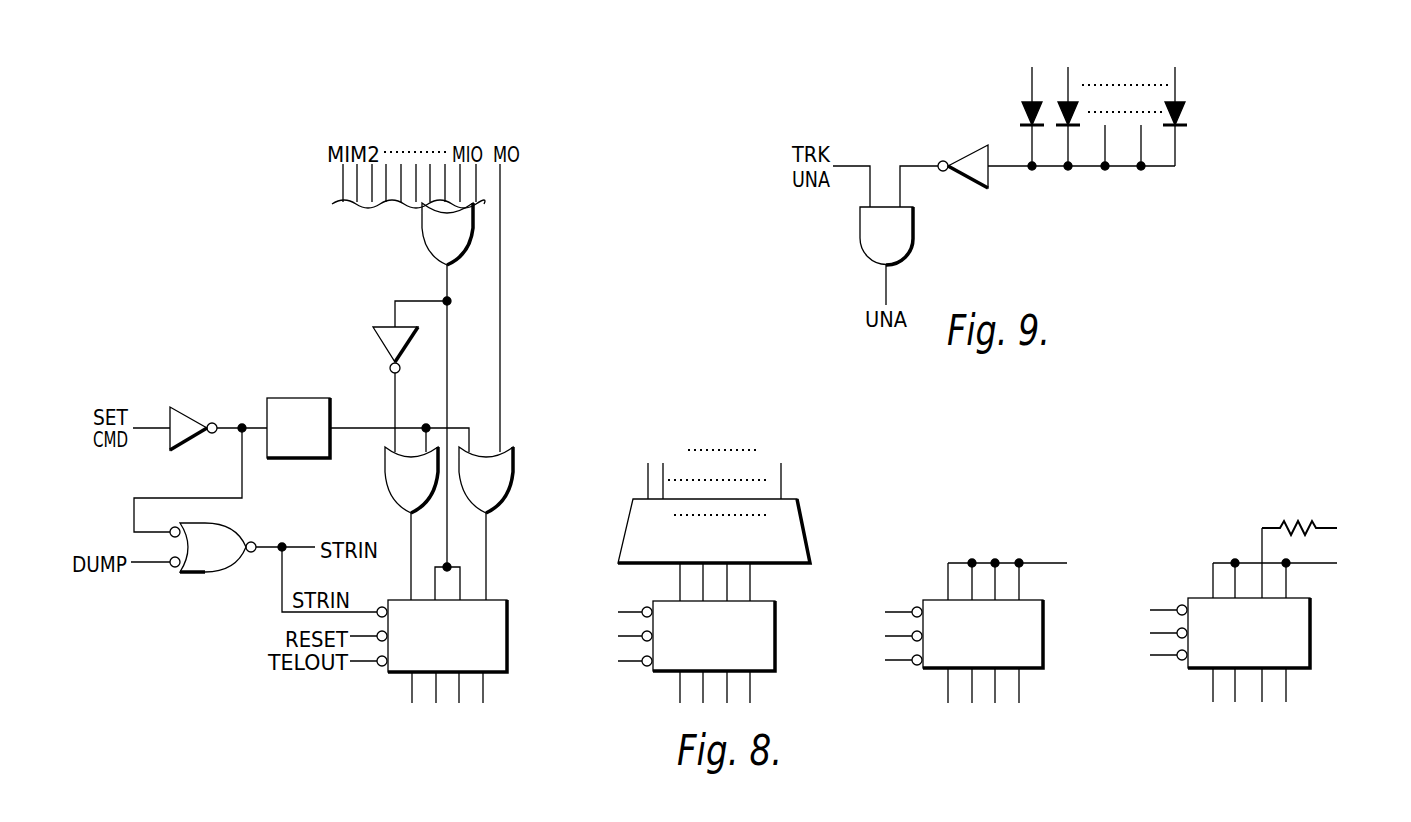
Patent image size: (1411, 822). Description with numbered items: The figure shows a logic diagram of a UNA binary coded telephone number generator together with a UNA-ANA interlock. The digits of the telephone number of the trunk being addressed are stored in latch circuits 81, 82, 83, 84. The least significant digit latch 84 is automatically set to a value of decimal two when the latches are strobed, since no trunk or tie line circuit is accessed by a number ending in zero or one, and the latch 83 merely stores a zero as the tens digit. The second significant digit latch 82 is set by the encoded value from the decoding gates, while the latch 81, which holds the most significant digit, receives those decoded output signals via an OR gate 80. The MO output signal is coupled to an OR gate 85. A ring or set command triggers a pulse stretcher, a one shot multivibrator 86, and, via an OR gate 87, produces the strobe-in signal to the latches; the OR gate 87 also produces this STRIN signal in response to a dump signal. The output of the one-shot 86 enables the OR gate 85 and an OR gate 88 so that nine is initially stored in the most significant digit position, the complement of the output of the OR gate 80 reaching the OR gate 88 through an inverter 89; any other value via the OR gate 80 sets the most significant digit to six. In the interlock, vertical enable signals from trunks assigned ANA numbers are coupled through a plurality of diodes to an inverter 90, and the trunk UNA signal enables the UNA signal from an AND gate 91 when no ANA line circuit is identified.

In FIG. 8, the OR gate 80 is at (422, 245).
In FIG. 8, the latch 81 is at (496, 673).
In FIG. 8, the second significant digit latch 82 is at (762, 672).
In FIG. 8, the latch 83 is at (1034, 669).
In FIG. 8, the digit latch 84 is at (1300, 669).
In FIG. 8, the OR gate 85 is at (513, 481).
In FIG. 8, the one shot multivibrator 86 is at (300, 398).
In FIG. 8, the OR gate 87 is at (214, 573).
In FIG. 8, the OR gate 88 is at (385, 493).
In FIG. 8, the inverter 89 is at (378, 346).
In FIG. 9, the inverter 90 is at (973, 152).
In FIG. 9, the AND gate 91 is at (913, 229).